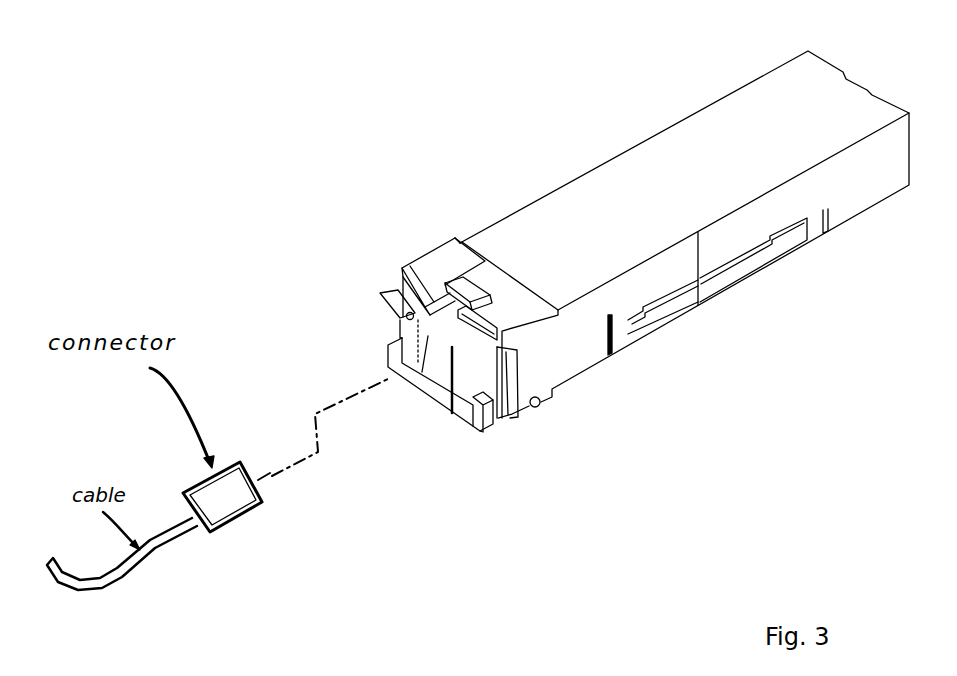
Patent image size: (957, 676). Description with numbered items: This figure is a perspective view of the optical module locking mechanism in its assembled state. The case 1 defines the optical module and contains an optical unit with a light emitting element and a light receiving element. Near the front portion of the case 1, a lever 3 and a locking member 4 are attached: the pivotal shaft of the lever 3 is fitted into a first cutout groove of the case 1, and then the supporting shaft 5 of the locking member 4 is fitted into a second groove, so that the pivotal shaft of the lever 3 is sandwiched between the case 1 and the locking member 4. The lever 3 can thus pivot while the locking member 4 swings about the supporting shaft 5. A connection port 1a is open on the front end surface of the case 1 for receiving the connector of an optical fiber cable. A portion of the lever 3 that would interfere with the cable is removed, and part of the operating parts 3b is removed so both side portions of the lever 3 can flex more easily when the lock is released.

The case 1 is at (690, 140).
The connection port 1a is at (432, 340).
The lever 3 is at (381, 287).
The operating parts 3b is at (395, 312).
The locking member 4 is at (500, 452).
The supporting shaft 5 is at (543, 404).